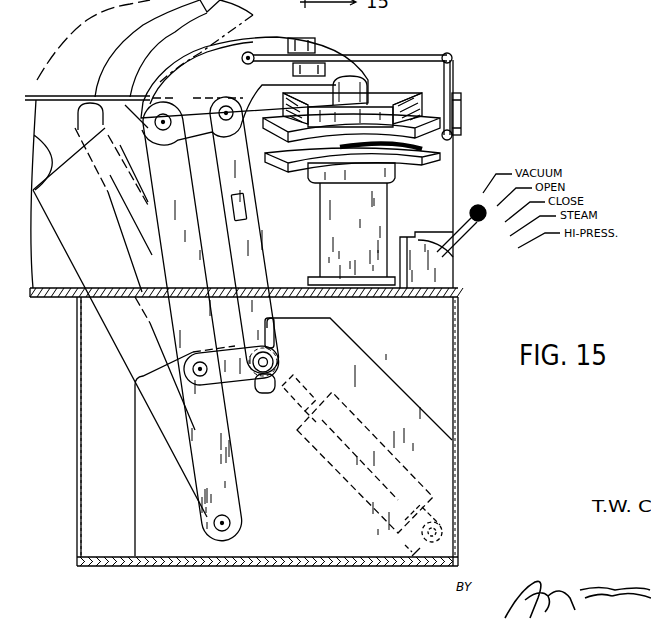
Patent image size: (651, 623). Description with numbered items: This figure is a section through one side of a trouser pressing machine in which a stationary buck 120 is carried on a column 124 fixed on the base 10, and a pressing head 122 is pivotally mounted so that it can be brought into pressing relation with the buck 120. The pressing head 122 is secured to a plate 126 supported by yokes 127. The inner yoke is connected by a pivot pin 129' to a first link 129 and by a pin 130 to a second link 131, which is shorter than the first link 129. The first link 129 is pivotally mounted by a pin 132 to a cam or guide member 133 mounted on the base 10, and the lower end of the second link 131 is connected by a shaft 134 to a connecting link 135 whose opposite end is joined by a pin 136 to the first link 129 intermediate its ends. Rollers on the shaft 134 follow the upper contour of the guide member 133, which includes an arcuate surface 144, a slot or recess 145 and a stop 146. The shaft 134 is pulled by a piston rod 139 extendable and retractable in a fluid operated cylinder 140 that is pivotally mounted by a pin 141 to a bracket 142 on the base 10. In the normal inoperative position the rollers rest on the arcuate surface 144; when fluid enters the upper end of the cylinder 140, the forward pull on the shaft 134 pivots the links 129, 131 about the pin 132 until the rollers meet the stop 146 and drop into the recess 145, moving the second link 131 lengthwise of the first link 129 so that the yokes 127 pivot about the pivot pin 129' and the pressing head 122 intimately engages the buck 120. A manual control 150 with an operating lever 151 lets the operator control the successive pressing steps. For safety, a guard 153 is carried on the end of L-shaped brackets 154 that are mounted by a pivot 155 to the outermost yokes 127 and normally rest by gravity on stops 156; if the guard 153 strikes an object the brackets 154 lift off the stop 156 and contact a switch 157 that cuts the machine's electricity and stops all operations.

The base 10 is at (307, 568).
The buck 120 is at (390, 173).
The pressing head 122 is at (461, 100).
The column 124 is at (337, 218).
The plate 126 is at (368, 90).
The yoke 127 is at (278, 45).
The first link 129 is at (186, 321).
The pivot pin 129' is at (175, 147).
The pin 130 is at (237, 124).
The second link 131 is at (250, 207).
The pin 132 is at (231, 525).
The guide member 133 is at (350, 362).
The shaft 134 is at (276, 359).
The connecting link 135 is at (242, 386).
The pin 136 is at (207, 382).
The piston rod 139 is at (286, 373).
The fluid operated cylinder 140 is at (333, 452).
The pin 141 is at (445, 532).
The bracket 142 is at (414, 568).
The arcuate surface 144 is at (143, 366).
The slot or recess 145 is at (272, 392).
The stop 146 is at (275, 334).
The manual control 150 is at (433, 279).
The operating lever 151 is at (462, 236).
The safety guard 153 is at (453, 136).
The L-shaped bracket 154 is at (453, 60).
The pivot 155 is at (243, 61).
The stop 156 is at (292, 70).
The switch 157 is at (313, 38).